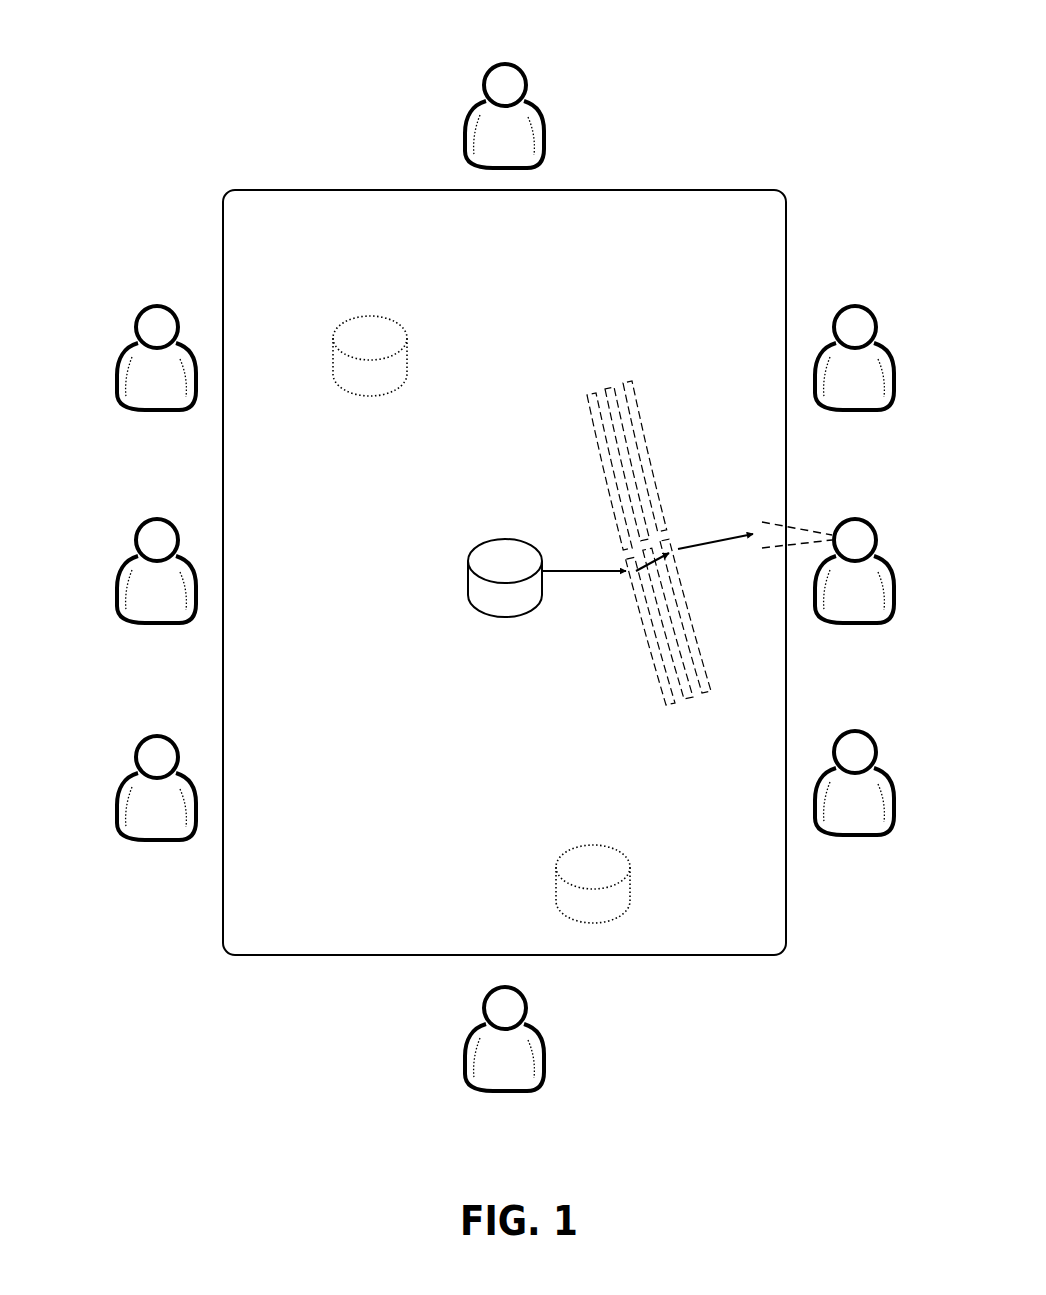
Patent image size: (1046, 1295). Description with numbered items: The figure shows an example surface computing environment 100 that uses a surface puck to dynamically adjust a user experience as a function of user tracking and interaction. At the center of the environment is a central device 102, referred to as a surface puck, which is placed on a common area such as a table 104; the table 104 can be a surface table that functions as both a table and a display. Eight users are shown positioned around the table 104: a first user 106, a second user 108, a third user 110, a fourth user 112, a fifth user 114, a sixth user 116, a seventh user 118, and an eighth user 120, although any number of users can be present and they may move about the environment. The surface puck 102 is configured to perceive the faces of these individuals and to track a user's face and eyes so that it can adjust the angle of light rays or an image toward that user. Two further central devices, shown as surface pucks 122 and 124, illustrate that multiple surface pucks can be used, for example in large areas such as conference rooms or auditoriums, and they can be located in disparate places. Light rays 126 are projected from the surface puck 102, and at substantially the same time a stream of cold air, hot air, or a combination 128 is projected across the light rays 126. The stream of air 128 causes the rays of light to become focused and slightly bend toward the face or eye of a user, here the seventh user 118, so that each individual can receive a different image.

The surface computing environment 100 is at (698, 48).
The central device 102 is at (499, 539).
The table 104 is at (317, 190).
The User_1 106 is at (487, 70).
The User_2 108 is at (141, 306).
The User_3 110 is at (141, 521).
The User_4 112 is at (141, 738).
The User_5 114 is at (517, 1091).
The User_6 116 is at (863, 734).
The User_7 118 is at (857, 520).
The User_8 120 is at (861, 306).
The surface puck 122 is at (362, 316).
The surface puck 124 is at (586, 845).
The light rays 126 is at (591, 573).
The stream of air 128 is at (606, 386).